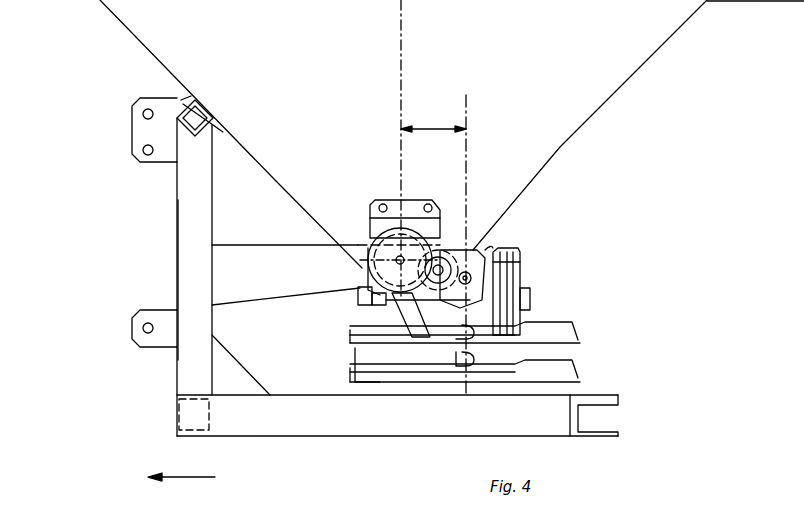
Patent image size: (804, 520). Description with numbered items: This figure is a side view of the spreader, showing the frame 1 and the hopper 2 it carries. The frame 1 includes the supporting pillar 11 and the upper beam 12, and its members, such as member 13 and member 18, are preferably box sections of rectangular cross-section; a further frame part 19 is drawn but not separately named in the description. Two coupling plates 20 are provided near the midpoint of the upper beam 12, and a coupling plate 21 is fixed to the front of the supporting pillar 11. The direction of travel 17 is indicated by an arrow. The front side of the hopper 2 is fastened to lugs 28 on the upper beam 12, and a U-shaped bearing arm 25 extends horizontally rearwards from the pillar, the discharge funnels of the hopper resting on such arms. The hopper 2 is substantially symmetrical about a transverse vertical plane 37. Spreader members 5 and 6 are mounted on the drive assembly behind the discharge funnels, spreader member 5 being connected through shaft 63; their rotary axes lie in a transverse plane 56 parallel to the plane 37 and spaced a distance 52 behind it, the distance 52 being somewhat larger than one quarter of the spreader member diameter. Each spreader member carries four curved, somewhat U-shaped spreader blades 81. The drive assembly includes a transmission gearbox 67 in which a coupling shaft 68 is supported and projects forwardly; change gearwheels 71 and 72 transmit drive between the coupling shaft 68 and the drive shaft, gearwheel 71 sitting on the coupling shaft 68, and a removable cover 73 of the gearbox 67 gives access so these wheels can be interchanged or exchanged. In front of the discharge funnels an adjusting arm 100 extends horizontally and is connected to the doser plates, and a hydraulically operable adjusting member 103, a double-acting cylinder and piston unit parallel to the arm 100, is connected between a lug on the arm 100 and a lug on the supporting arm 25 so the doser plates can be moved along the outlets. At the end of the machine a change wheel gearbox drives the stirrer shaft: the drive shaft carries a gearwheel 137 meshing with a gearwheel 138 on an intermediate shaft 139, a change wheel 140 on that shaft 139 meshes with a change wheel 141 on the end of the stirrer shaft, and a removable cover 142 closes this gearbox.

The frame 1 is at (177, 222).
The hopper 2 is at (602, 110).
The spreader member 5 is at (578, 376).
The spreader member 6 is at (578, 340).
The supporting pillar 11 is at (177, 286).
The upper beam 12 is at (206, 109).
The frame member 13 is at (178, 420).
The direction of travel 17 is at (190, 480).
The frame member 18 is at (330, 440).
The base channel end 19 is at (618, 434).
The coupling plates 20 is at (132, 129).
The coupling plate 21 is at (147, 346).
The bearing arm 25 is at (283, 250).
The lugs 28 is at (178, 94).
The transverse vertical plane 37 is at (401, 96).
The distance 52 is at (448, 126).
The transverse plane 56 is at (466, 118).
The shaft 63 is at (475, 356).
The transmission gearbox 67 is at (505, 250).
The coupling shaft 68 is at (395, 318).
The change gearwheel 71 is at (520, 318).
The change gearwheel 72 is at (520, 270).
The removable cover 73 is at (520, 256).
The spreader blades 81 is at (355, 366).
The adjusting arm 100 is at (362, 286).
The adjusting member 103 is at (372, 298).
The gearwheel 137 is at (467, 272).
The gearwheel 138 is at (473, 250).
The intermediate shaft 139 is at (442, 250).
The change wheel 140 is at (434, 254).
The change wheel 141 is at (370, 240).
The removable cover 142 is at (391, 200).